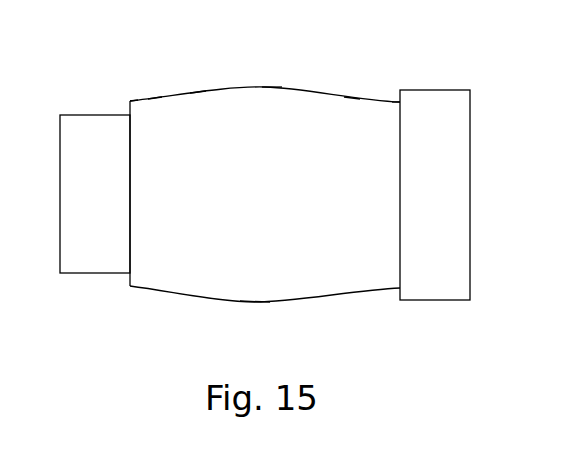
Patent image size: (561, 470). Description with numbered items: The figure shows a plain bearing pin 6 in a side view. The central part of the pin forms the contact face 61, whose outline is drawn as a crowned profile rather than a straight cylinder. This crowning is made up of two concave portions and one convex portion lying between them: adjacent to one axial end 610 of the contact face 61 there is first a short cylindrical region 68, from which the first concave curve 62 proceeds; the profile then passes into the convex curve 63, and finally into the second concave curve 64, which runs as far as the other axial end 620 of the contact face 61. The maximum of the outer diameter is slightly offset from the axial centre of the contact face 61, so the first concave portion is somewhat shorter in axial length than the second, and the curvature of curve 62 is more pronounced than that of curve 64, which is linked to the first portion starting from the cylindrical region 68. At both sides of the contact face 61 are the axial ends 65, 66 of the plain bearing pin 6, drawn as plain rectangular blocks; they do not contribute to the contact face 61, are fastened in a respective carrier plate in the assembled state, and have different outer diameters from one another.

The plain bearing pin 6 is at (125, 299).
The contact face 61 is at (253, 304).
The concave curve of first concave portion 62 is at (198, 89).
The convex curve 63 is at (272, 82).
The concave curve of second concave portion 64 is at (352, 94).
The axial end of plain bearing pin 65 is at (92, 113).
The axial end of plain bearing pin 66 is at (432, 90).
The cylindrical region 68 is at (155, 94).
The axial end of contact face 610 is at (130, 96).
The axial end of contact face 620 is at (400, 97).